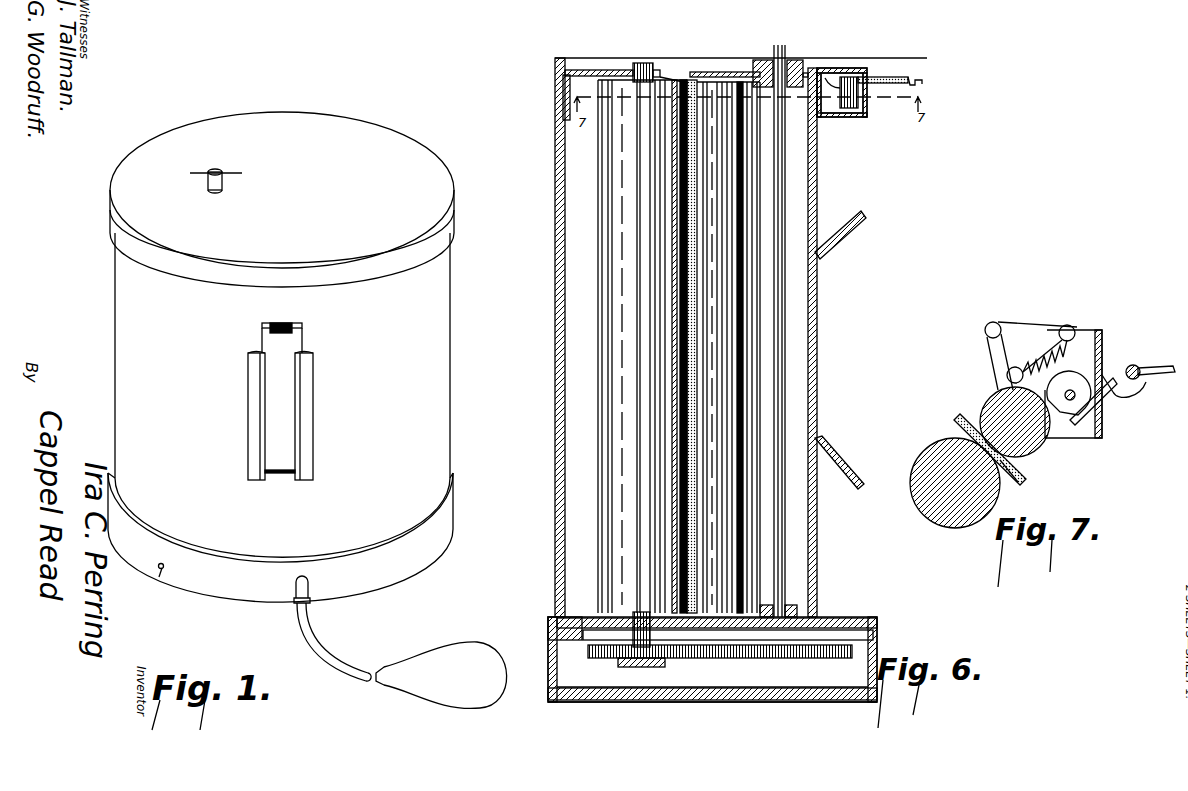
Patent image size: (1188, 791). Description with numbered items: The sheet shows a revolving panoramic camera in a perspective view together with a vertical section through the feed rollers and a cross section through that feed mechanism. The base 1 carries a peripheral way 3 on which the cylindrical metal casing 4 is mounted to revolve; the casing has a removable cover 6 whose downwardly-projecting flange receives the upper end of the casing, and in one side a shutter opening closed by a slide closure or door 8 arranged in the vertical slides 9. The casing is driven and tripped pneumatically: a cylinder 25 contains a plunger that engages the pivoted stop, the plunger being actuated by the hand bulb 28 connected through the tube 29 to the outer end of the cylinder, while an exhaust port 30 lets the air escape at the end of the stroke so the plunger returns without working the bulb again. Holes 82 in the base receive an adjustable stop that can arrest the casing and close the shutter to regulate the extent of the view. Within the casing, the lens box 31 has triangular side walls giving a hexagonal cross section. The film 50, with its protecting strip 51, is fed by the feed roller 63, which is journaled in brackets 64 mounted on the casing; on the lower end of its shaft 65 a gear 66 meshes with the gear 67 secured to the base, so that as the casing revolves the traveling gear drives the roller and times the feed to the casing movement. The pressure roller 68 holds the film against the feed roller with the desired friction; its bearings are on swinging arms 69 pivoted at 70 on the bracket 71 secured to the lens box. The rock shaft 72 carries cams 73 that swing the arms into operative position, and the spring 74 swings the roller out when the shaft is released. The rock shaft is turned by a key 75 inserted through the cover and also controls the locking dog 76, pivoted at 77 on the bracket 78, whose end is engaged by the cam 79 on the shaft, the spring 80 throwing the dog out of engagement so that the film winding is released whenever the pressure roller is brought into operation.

In FIG. 1, the base 1 is at (378, 563).
In FIG. 6, the base 1 is at (797, 698).
In FIG. 6, the peripheral way 3 is at (712, 659).
In FIG. 1, the casing 4 is at (433, 342).
In FIG. 6, the casing 4 is at (555, 432).
In FIG. 1, the removable cover 6 is at (385, 136).
In FIG. 1, the slide closure or door 8 is at (288, 342).
In FIG. 1, the vertical slides 9 is at (308, 408).
In FIG. 1, the cylinder 25 is at (297, 583).
In FIG. 1, the hand bulb 28 is at (462, 649).
In FIG. 1, the tube 29 is at (308, 633).
In FIG. 1, the exhaust port 30 is at (308, 585).
In FIG. 6, the lens box 31 is at (842, 240).
In FIG. 6, the film 50 is at (713, 77).
In FIG. 7, the film 50 is at (1018, 470).
In FIG. 6, the protecting strip 51 is at (688, 83).
In FIG. 7, the protecting strip 51 is at (955, 425).
In FIG. 6, the feed roller 63 is at (612, 307).
In FIG. 7, the feed roller 63 is at (910, 490).
In FIG. 6, the brackets 64 is at (568, 72).
In FIG. 6, the shaft 65 is at (647, 63).
In FIG. 6, the gear 66 is at (660, 667).
In FIG. 6, the gear 67 is at (762, 650).
In FIG. 6, the pressure roller 68 is at (730, 558).
In FIG. 7, the pressure roller 68 is at (995, 398).
In FIG. 6, the swinging arms 69 is at (755, 65).
In FIG. 7, the swinging arms 69 is at (1023, 335).
In FIG. 7, the pivot 70 is at (993, 322).
In FIG. 6, the bracket 71 is at (776, 60).
In FIG. 7, the bracket 71 is at (1102, 326).
In FIG. 6, the rock shaft 72 is at (777, 318).
In FIG. 7, the rock shaft 72 is at (1070, 395).
In FIG. 6, the cams 73 is at (792, 603).
In FIG. 7, the cams 73 is at (1066, 412).
In FIG. 7, the spring 74 is at (1065, 325).
In FIG. 1, the key 75 is at (222, 162).
In FIG. 6, the locking dog 76 is at (922, 83).
In FIG. 7, the locking dog 76 is at (1165, 372).
In FIG. 6, the pivot 77 is at (862, 108).
In FIG. 7, the pivot 77 is at (1135, 358).
In FIG. 6, the bracket 78 is at (840, 67).
In FIG. 7, the bracket 78 is at (1130, 395).
In FIG. 6, the cam 79 is at (795, 60).
In FIG. 6, the spring 80 is at (887, 75).
In FIG. 1, the holes 82 is at (151, 579).